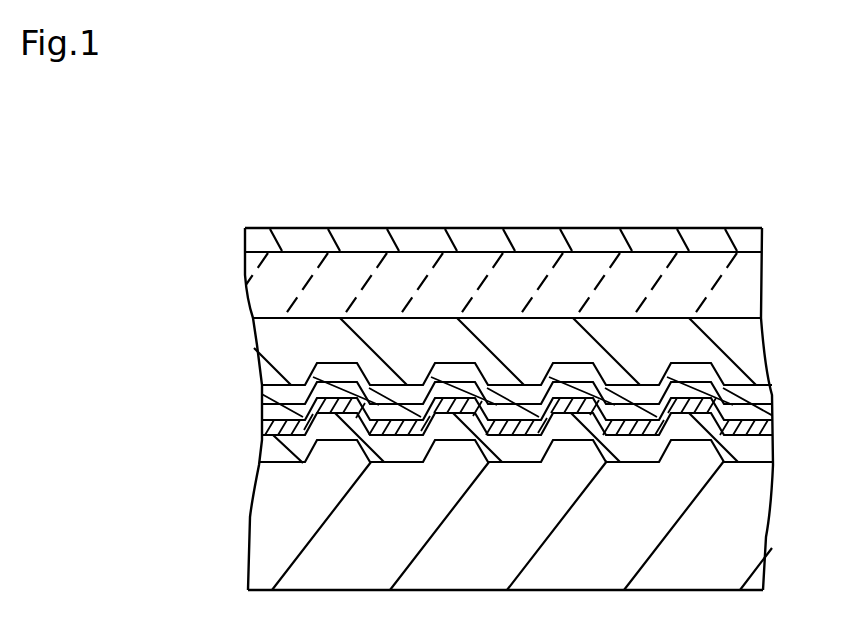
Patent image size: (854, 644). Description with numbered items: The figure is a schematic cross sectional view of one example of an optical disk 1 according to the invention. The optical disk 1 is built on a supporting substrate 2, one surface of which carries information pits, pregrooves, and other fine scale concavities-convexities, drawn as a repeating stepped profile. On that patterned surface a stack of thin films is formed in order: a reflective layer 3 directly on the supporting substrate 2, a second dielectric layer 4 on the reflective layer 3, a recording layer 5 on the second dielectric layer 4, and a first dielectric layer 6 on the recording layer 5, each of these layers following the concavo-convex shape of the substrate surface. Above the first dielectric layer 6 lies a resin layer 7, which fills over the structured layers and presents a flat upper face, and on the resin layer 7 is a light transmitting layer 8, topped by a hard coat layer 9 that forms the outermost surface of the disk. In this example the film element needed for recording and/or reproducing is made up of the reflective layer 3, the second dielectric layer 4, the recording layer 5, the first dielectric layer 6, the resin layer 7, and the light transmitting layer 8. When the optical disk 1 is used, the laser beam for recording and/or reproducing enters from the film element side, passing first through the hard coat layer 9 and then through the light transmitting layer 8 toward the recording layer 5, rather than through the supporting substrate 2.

The optical disk 1 is at (682, 216).
The supporting substrate 2 is at (752, 541).
The reflective layer 3 is at (767, 452).
The second dielectric layer 4 is at (772, 428).
The recording layer 5 is at (772, 408).
The first dielectric layer 6 is at (762, 398).
The resin layer 7 is at (763, 363).
The light transmitting layer 8 is at (747, 292).
The hard coat layer 9 is at (750, 243).